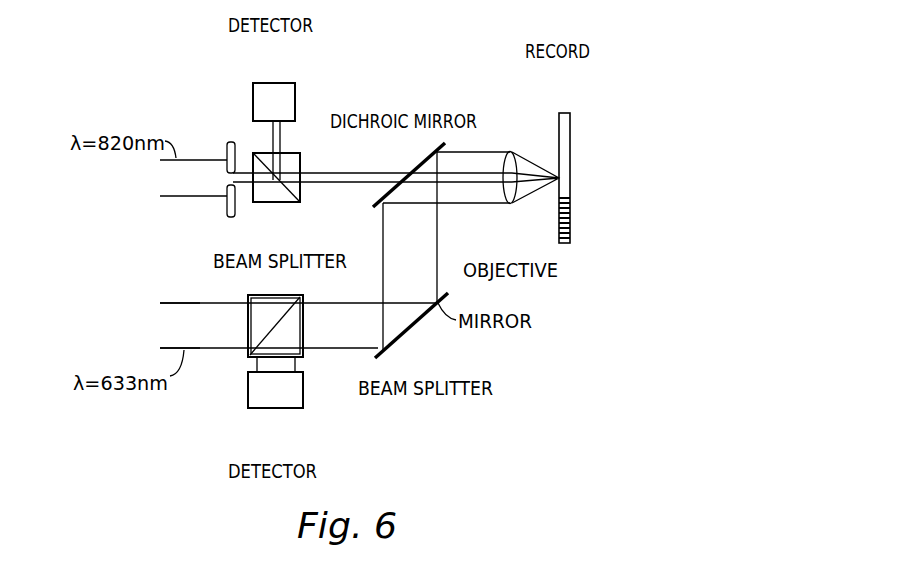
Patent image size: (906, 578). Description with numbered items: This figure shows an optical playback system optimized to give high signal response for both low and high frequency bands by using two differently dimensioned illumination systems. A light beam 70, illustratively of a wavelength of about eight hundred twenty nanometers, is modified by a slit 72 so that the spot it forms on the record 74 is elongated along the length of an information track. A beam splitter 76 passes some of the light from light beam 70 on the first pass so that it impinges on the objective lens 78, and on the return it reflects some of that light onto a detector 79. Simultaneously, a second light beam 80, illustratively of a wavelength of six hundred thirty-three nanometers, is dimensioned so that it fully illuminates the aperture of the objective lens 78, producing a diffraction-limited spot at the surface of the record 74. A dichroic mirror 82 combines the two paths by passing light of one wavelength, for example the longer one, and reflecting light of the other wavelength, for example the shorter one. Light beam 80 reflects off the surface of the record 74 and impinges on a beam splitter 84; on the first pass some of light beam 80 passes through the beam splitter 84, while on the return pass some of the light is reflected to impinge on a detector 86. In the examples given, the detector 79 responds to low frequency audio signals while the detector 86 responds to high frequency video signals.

The light beam 70 is at (166, 197).
The slit 72 is at (227, 215).
The record 74 is at (566, 111).
The beam splitter 76 is at (280, 204).
The objective lens 78 is at (512, 205).
The detector 79 is at (276, 82).
The light beam 80 is at (163, 302).
The dichroic mirror 82 is at (416, 170).
The beam splitter 84 is at (302, 358).
The detector 86 is at (277, 410).